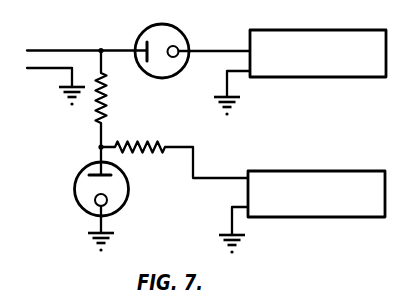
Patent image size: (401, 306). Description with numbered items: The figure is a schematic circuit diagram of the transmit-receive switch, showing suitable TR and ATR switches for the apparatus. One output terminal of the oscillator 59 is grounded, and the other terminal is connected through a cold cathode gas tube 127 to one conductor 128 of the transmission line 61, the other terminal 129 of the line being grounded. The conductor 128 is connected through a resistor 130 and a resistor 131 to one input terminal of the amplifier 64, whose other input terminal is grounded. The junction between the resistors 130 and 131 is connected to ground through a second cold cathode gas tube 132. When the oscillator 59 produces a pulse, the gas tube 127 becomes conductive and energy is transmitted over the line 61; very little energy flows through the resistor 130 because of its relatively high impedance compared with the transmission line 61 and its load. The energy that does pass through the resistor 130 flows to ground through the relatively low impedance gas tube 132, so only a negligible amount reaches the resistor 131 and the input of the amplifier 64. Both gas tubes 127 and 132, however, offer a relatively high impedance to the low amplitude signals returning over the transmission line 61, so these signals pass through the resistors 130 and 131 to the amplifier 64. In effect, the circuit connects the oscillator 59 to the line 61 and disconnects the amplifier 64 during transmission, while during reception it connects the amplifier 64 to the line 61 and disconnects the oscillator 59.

The transmission line 61 is at (39, 41).
The conductor 128 is at (69, 49).
The terminal 129 is at (53, 70).
The resistor 130 is at (108, 98).
The cold cathode gas tube 127 is at (181, 32).
The oscillator 59 is at (282, 30).
The resistor 131 is at (157, 147).
The amplifier 64 is at (287, 171).
The second cold cathode gas tube 132 is at (75, 186).